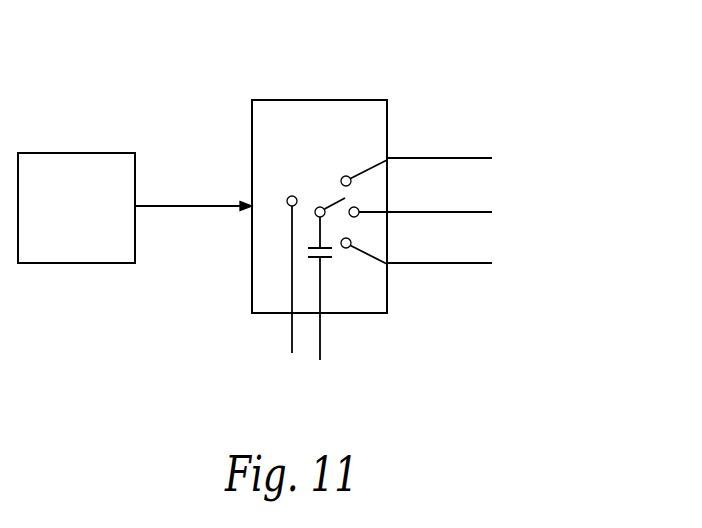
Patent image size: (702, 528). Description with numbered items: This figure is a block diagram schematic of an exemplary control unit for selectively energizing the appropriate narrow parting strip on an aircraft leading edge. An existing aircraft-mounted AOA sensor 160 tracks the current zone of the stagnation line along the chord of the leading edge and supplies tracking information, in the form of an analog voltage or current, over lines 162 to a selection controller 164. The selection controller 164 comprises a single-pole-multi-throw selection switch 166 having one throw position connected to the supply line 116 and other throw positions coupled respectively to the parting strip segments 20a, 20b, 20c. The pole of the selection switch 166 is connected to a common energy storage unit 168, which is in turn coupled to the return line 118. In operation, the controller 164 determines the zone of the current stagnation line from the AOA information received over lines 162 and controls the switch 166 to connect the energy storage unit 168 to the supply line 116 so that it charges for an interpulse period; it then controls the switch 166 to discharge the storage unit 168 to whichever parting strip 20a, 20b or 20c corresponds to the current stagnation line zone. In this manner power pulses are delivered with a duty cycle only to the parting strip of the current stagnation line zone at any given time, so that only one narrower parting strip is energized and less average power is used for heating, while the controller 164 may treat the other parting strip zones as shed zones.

The AOA sensor 160 is at (74, 263).
The lines 162 is at (203, 203).
The selection controller 164 is at (366, 100).
The single-pole-multi-throw selection switch 166 is at (333, 196).
The supply line 116 is at (277, 292).
The return line 118 is at (337, 323).
The energy storage unit 168 is at (327, 262).
The parting strip segment 20a is at (435, 164).
The parting strip segment 20b is at (439, 213).
The parting strip segment 20c is at (435, 259).